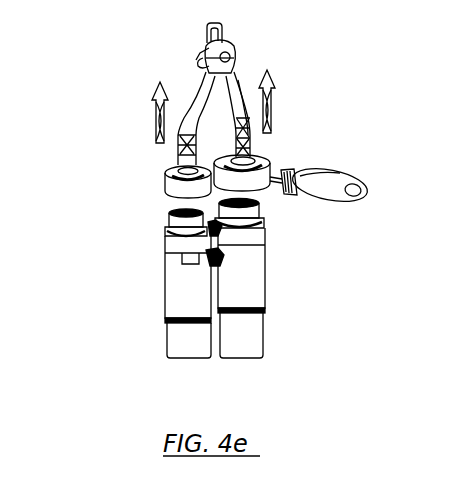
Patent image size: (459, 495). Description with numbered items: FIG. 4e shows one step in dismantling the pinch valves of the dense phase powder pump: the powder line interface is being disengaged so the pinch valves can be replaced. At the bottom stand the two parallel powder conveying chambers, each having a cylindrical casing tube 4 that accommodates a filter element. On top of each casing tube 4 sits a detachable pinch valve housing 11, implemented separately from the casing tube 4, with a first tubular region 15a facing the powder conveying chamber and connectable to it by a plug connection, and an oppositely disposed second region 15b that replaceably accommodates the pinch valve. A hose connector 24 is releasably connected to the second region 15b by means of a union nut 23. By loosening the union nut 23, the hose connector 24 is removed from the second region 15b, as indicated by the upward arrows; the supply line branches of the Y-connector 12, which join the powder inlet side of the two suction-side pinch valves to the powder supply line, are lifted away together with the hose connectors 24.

The Y-connector 12 is at (210, 54).
The hose connector 24 is at (183, 164).
The union nut 23 is at (180, 187).
The pinch valve housing 11 is at (214, 279).
The second region 15b is at (182, 245).
The first tubular region 15a is at (180, 303).
The casing tube 4 is at (186, 343).